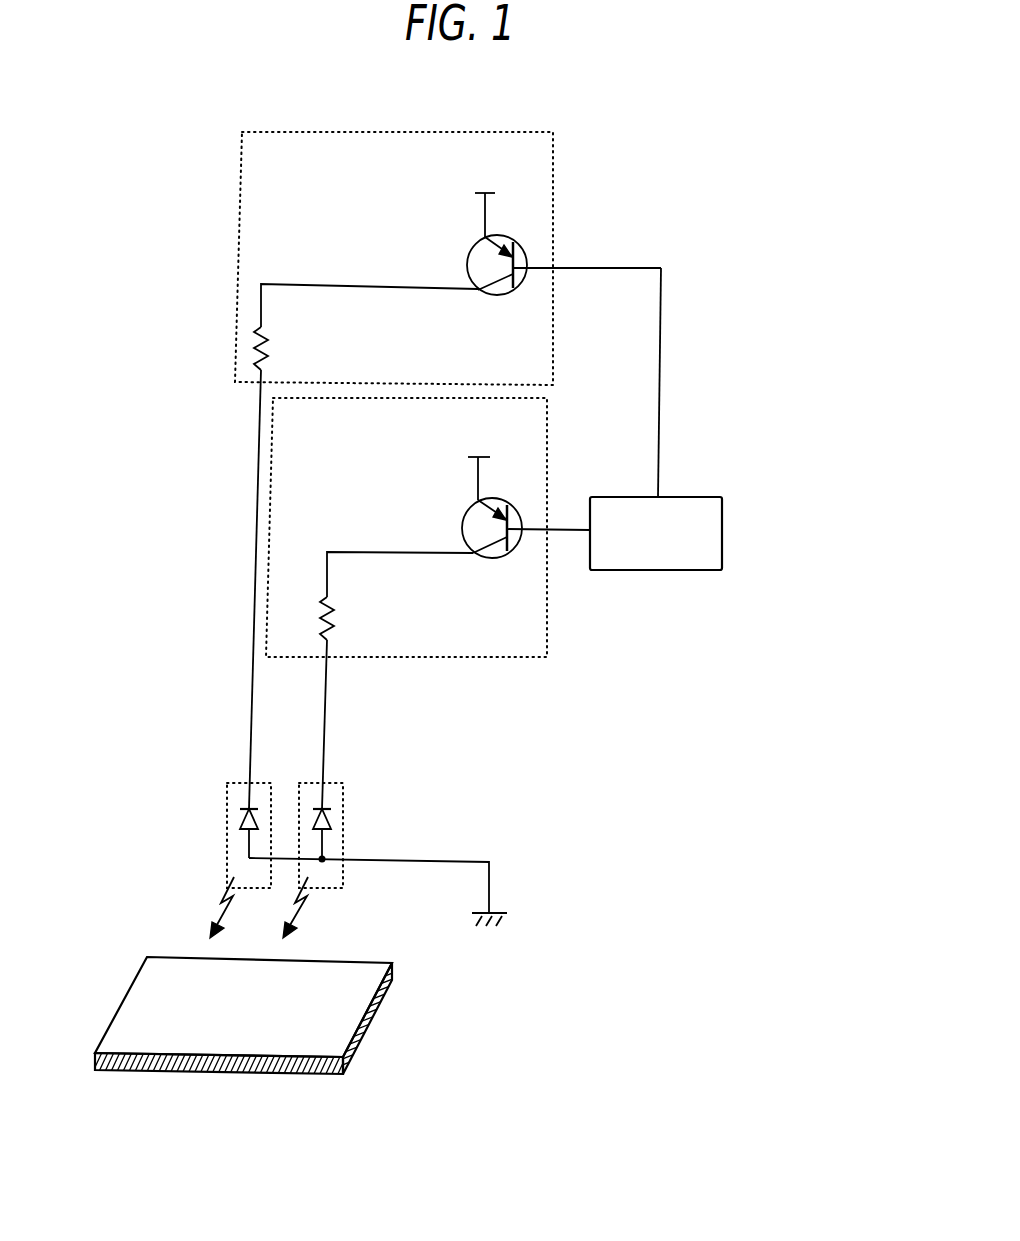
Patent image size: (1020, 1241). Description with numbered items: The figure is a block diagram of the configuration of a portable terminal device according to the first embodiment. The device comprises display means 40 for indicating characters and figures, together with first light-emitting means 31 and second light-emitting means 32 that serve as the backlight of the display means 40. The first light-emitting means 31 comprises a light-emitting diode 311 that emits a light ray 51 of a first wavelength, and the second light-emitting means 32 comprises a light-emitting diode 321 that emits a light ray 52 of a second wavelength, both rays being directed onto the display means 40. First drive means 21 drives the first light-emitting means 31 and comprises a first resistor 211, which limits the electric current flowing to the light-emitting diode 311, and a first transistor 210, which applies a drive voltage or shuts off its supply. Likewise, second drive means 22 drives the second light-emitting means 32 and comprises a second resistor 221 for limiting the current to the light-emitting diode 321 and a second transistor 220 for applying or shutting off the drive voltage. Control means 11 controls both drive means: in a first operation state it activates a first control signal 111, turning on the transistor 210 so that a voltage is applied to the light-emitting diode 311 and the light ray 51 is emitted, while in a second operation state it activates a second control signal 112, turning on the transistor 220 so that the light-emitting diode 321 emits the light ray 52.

The control means 11 is at (722, 538).
The first drive means 21 is at (553, 162).
The second drive means 22 is at (547, 425).
The first light-emitting means 31 is at (167, 812).
The second light-emitting means 32 is at (484, 820).
The display means 40 is at (368, 1036).
The light ray of a first wavelength 51 is at (220, 912).
The light ray of a second wavelength 52 is at (300, 916).
The first control signal 111 is at (662, 300).
The second control signal 112 is at (570, 530).
The first transistor 210 is at (468, 262).
The first resistor 211 is at (270, 349).
The second transistor 220 is at (462, 523).
The second resistor 221 is at (337, 619).
The light-emitting diode 311 is at (255, 806).
The light-emitting diode 321 is at (328, 806).